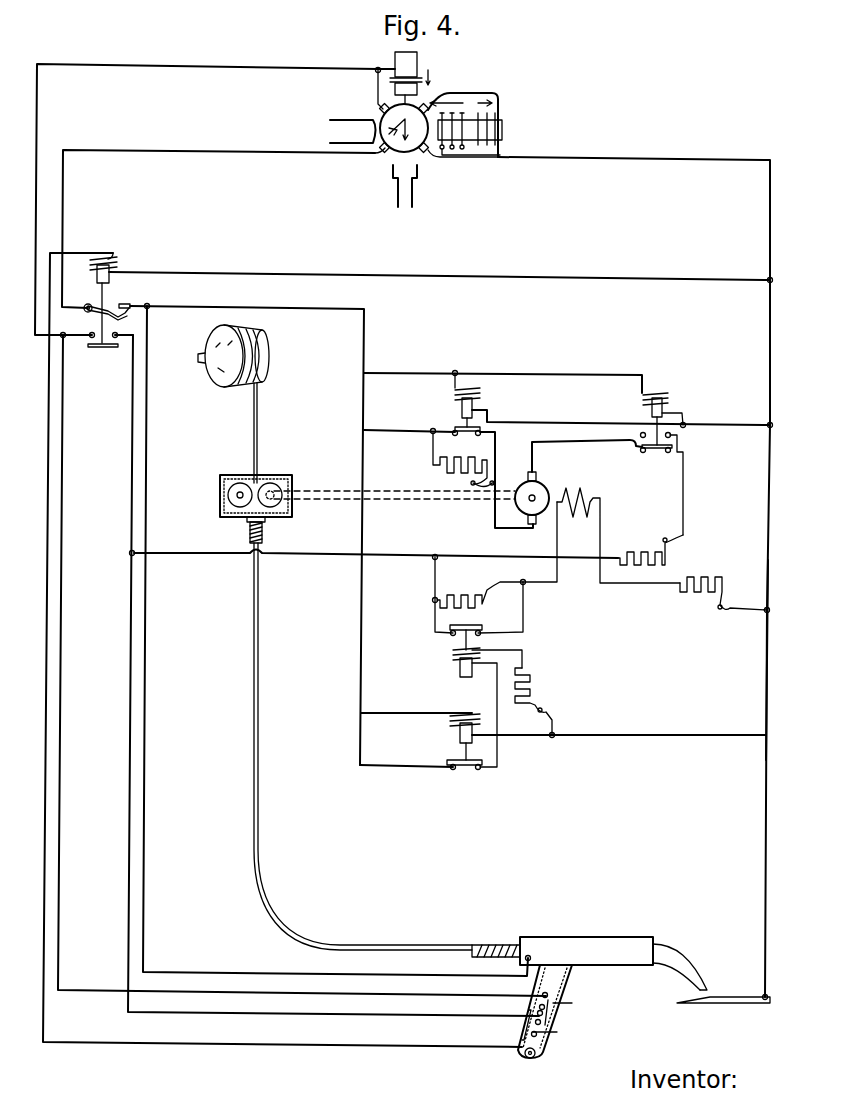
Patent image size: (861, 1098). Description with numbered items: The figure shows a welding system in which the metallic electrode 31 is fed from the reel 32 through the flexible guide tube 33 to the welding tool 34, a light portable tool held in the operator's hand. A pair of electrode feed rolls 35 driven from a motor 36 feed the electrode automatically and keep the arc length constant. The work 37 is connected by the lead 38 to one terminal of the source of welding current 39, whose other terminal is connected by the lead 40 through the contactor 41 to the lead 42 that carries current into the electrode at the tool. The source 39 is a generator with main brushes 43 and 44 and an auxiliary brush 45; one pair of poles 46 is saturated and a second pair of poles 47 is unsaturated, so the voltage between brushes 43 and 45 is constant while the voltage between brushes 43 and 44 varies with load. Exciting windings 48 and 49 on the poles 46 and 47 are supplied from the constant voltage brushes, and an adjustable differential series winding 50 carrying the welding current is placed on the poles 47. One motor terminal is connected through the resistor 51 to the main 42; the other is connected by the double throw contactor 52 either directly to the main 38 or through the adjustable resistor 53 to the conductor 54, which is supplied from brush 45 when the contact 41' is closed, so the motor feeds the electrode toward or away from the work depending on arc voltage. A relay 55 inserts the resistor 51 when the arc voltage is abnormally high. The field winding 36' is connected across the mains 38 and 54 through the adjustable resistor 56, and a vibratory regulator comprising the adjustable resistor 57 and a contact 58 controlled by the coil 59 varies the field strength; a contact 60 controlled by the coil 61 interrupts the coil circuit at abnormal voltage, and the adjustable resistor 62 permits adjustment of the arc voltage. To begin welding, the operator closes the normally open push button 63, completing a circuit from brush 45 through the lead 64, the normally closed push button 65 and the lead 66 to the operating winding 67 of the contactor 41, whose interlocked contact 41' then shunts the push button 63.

The metallic electrode 31 is at (258, 449).
The reel 32 is at (268, 359).
The flexible guide tube 33 is at (264, 538).
The welding tool 34 is at (585, 940).
The electrode feed rolls 35 is at (285, 485).
The motor 36 is at (578, 482).
The field winding 36' is at (601, 529).
The work 37 is at (720, 1000).
The lead 38 is at (766, 710).
The source of welding current 39 is at (420, 155).
The lead 40 is at (246, 153).
The contactor 41 is at (224, 522).
The interlocked contact 41' is at (103, 364).
The lead 42 is at (148, 347).
The main brush 43 is at (433, 104).
The main brush 44 is at (382, 156).
The auxiliary brush 45 is at (377, 108).
The poles 46 is at (395, 60).
The poles 47 is at (500, 148).
The exciting winding 48 is at (425, 82).
The exciting winding 49 is at (500, 116).
The differential series winding 50 is at (462, 130).
The resistor 51 is at (448, 468).
The double throw contactor 52 is at (670, 406).
The adjustable resistor 53 is at (635, 553).
The conductor 54 is at (131, 494).
The relay 55 is at (482, 411).
The adjustable resistor 56 is at (700, 581).
The adjustable resistor 57 is at (455, 596).
The contact 58 is at (472, 628).
The coil 59 is at (455, 660).
The contact 60 is at (466, 770).
The coil 61 is at (456, 730).
The adjustable resistor 62 is at (530, 690).
The push button 63 is at (572, 1003).
The lead 64 is at (220, 69).
The push button 65 is at (543, 1045).
The lead 66 is at (46, 660).
The operating winding 67 is at (110, 266).